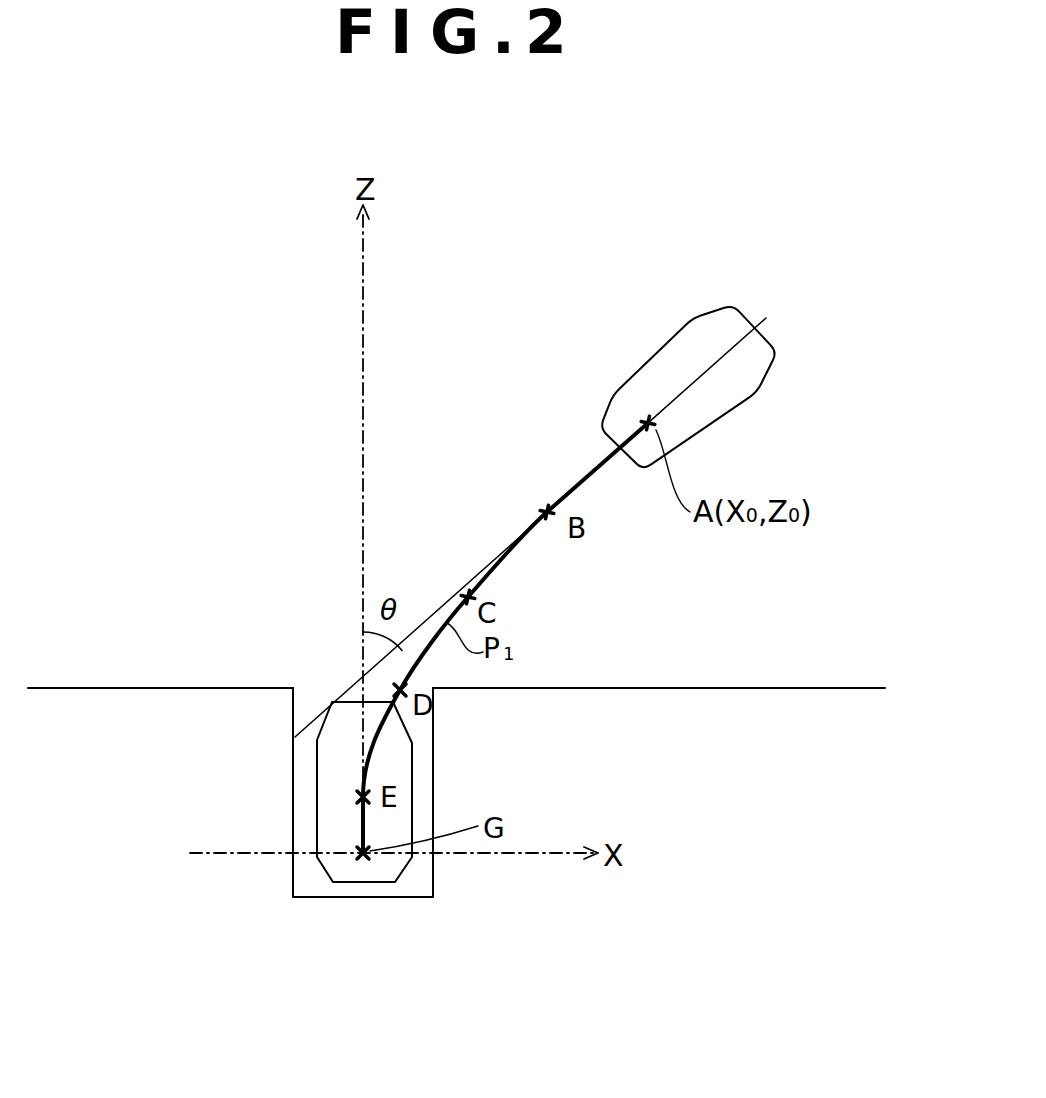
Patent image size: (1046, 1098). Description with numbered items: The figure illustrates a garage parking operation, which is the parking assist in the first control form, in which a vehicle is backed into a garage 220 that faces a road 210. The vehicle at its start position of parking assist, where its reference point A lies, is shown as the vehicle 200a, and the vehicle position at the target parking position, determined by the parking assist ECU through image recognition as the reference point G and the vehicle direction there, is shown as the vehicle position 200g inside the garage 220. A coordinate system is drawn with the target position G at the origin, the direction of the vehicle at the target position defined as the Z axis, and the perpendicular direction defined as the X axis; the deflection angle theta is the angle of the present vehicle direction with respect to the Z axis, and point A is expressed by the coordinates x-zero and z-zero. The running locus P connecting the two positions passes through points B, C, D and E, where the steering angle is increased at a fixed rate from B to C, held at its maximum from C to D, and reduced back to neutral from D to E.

The vehicle at reference point A 200a is at (757, 390).
The vehicle position at target parking position 200g is at (412, 757).
The road 210 is at (632, 677).
The garage 220 is at (293, 750).